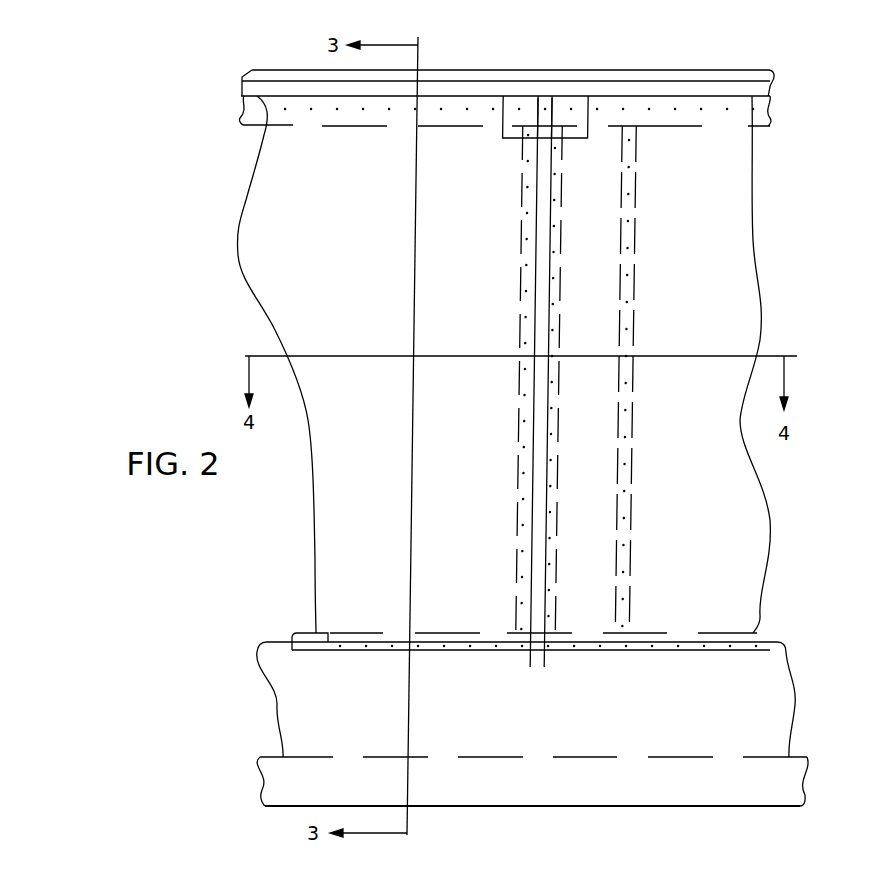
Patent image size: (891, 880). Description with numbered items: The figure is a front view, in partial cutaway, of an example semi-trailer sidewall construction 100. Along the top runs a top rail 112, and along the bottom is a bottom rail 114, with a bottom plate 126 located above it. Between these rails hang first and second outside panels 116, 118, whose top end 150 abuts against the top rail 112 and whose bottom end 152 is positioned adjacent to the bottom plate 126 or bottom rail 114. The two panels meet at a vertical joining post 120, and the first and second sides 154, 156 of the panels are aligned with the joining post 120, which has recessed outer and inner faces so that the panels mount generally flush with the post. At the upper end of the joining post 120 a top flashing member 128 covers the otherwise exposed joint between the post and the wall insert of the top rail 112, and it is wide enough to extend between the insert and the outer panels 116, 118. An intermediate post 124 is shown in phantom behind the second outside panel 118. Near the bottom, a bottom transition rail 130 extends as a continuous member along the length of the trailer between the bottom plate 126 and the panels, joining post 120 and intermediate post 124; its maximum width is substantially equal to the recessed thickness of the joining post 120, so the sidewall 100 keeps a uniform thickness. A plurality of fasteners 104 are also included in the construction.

The sidewall construction 100 is at (812, 88).
The fasteners 104 is at (595, 113).
The top rail 112 is at (675, 82).
The bottom rail 114 is at (268, 785).
The first outside panel 116 is at (342, 461).
The second outside panel 118 is at (742, 271).
The joining post 120 is at (543, 270).
The intermediate post 124 is at (635, 168).
The bottom plate 126 is at (290, 692).
The top flashing member 128 is at (545, 132).
The bottom transition rail 130 is at (298, 633).
The top end 150 is at (462, 97).
The bottom end 152 is at (368, 648).
The first side 154 is at (530, 393).
The second side 156 is at (545, 402).